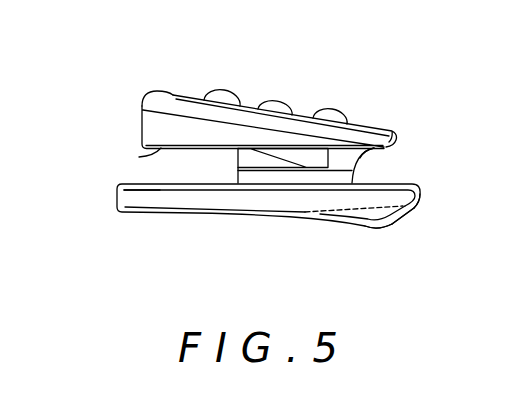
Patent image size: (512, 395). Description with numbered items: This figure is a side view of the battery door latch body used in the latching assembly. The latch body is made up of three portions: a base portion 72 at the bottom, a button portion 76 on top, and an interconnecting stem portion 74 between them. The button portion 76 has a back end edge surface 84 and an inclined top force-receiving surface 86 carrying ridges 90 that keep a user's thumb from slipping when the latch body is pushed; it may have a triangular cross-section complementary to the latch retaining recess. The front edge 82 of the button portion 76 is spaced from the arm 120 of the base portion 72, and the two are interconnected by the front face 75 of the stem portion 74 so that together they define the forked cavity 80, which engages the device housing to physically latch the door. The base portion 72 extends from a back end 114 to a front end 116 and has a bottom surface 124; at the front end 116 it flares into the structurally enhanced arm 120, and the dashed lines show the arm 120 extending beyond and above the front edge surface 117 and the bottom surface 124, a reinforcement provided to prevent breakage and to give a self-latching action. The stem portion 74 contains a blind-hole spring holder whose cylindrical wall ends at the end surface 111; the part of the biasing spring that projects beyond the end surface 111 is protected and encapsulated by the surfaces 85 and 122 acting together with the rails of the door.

The base portion 72 is at (317, 200).
The stem portion 74 is at (275, 156).
The front face 75 is at (365, 154).
The button portion 76 is at (160, 128).
The forked cavity 80 is at (381, 174).
The front edge 82 is at (398, 126).
The back end edge surface 84 is at (140, 93).
The surface 85 is at (153, 155).
The top force-receiving surface 86 is at (250, 103).
The ridges 90 is at (333, 107).
The end surface 111 is at (232, 165).
The back end 114 is at (111, 199).
The front end 116 is at (418, 220).
The front edge surface 117 is at (420, 211).
The arm 120 is at (397, 224).
The surface 122 is at (152, 183).
The bottom surface 124 is at (130, 222).